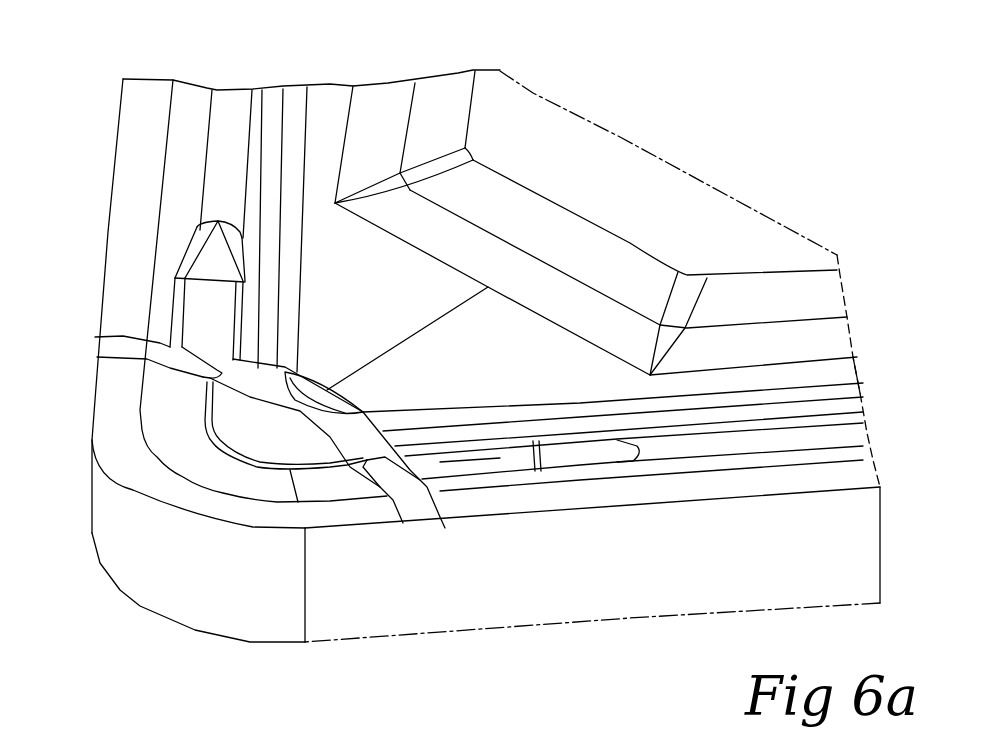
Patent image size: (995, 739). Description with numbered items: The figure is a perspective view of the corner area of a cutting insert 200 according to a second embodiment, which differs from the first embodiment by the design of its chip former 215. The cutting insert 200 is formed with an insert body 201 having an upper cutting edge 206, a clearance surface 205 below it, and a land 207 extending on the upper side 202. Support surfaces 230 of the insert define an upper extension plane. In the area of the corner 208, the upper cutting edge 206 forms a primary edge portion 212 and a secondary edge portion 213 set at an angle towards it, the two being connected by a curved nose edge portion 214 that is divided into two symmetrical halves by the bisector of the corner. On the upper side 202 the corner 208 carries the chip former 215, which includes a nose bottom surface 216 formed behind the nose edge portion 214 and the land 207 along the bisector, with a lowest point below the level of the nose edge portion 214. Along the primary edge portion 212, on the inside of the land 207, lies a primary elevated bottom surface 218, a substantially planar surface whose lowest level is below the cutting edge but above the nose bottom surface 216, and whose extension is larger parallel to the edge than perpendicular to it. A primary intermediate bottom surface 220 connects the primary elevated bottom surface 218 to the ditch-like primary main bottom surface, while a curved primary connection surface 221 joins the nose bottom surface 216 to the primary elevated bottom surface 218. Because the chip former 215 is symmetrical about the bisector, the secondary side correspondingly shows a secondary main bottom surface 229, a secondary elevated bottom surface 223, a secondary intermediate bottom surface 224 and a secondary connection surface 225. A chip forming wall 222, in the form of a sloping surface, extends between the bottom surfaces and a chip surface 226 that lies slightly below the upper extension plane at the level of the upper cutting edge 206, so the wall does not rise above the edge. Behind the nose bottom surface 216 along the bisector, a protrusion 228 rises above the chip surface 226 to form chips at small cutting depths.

The cutting insert 200 is at (670, 140).
The insert body 201 is at (827, 300).
The upper side 202 is at (325, 108).
The clearance surface 205 is at (534, 603).
The upper cutting edge 206 is at (122, 110).
The land 207 is at (152, 93).
The corner 208 is at (76, 376).
The primary edge portion 212 is at (630, 503).
The secondary edge portion 213 is at (108, 232).
The nose edge portion 214 is at (135, 490).
The chip former 215 is at (634, 464).
The nose bottom surface 216 is at (293, 447).
The primary elevated bottom surface 218 is at (450, 455).
The primary intermediate bottom surface 220 is at (557, 455).
The primary connection surface 221 is at (370, 443).
The chip forming wall 222 is at (813, 408).
The secondary elevated bottom surface 223 is at (145, 290).
The secondary intermediate bottom surface 224 is at (212, 263).
The secondary connection surface 225 is at (229, 414).
The chip surface 226 is at (492, 360).
The protrusion 228 is at (315, 392).
The secondary main bottom surface 229 is at (233, 112).
The support surfaces 230 is at (644, 208).